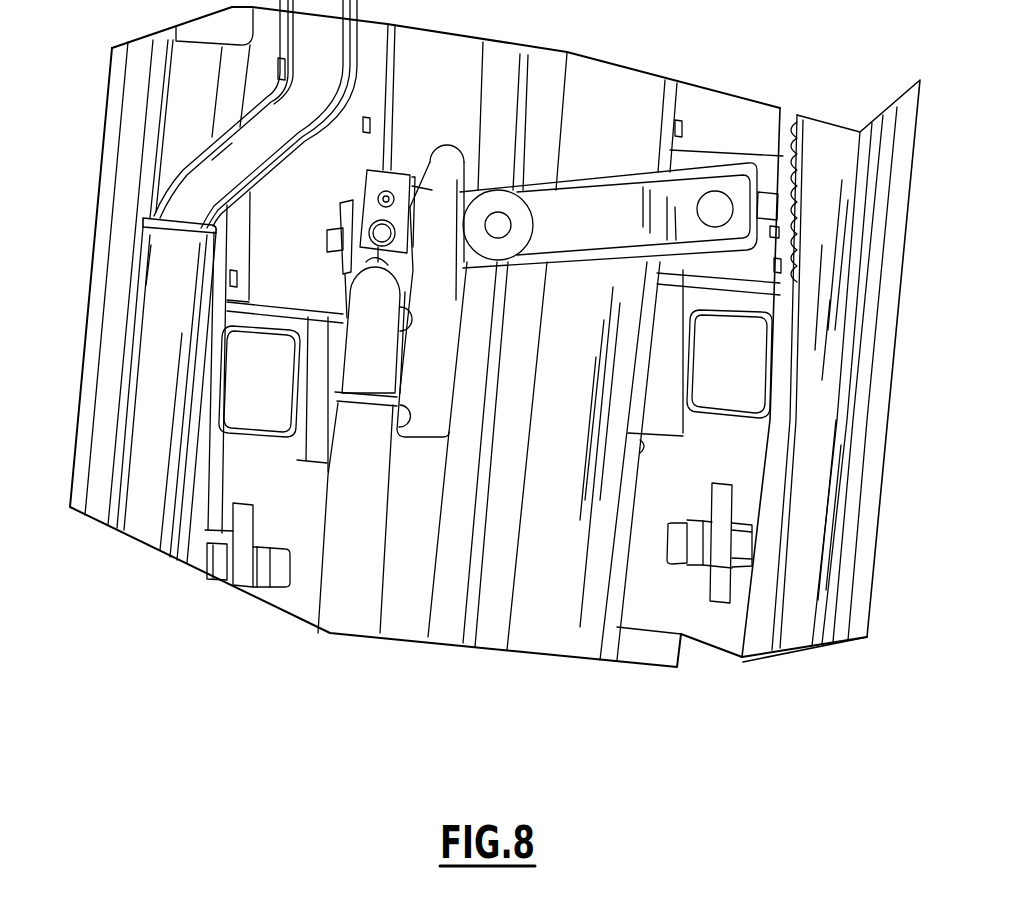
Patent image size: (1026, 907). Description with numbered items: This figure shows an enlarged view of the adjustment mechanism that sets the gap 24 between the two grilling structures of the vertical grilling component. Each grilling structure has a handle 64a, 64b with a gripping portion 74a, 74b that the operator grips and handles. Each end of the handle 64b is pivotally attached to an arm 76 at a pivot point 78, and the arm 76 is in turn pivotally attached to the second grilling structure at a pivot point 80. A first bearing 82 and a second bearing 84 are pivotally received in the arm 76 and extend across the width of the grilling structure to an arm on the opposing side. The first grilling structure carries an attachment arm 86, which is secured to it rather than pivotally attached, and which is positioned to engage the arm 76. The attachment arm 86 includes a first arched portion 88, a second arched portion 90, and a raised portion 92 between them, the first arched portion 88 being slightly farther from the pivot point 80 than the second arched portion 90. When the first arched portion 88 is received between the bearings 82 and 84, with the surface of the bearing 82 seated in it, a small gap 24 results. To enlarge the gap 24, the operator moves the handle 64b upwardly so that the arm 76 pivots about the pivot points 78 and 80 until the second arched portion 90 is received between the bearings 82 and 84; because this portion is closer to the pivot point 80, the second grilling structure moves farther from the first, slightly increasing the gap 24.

The gap 24 is at (468, 642).
The handle 64a is at (185, 166).
The handle 64b is at (368, 355).
The gripping portion 74a is at (147, 352).
The gripping portion 74b is at (360, 597).
The arm 76 is at (628, 210).
The pivot point 78 is at (380, 235).
The pivot point 80 is at (715, 208).
The first bearing 82 is at (350, 217).
The second bearing 84 is at (528, 210).
The attachment arm 86 is at (433, 345).
The first arched portion 88 is at (400, 296).
The second arched portion 90 is at (430, 187).
The raised portion 92 is at (385, 172).